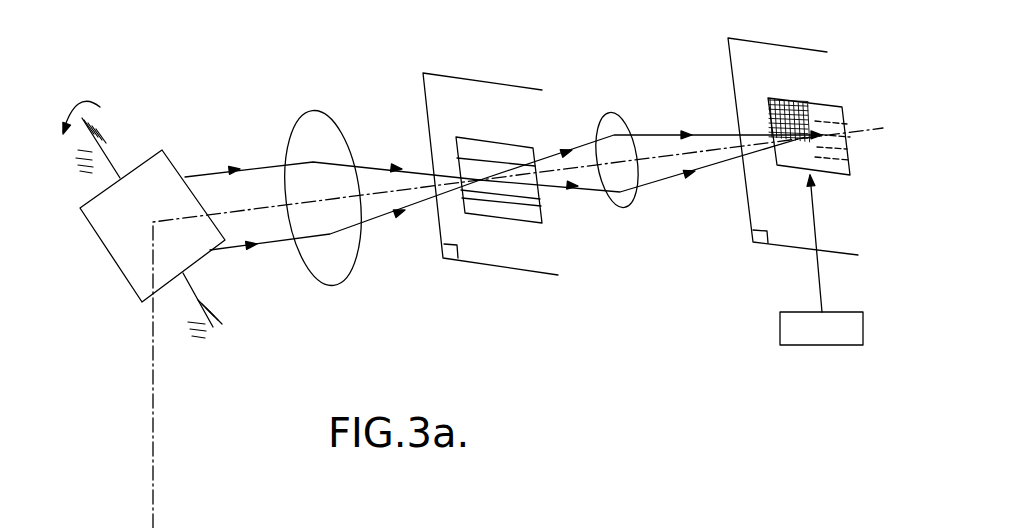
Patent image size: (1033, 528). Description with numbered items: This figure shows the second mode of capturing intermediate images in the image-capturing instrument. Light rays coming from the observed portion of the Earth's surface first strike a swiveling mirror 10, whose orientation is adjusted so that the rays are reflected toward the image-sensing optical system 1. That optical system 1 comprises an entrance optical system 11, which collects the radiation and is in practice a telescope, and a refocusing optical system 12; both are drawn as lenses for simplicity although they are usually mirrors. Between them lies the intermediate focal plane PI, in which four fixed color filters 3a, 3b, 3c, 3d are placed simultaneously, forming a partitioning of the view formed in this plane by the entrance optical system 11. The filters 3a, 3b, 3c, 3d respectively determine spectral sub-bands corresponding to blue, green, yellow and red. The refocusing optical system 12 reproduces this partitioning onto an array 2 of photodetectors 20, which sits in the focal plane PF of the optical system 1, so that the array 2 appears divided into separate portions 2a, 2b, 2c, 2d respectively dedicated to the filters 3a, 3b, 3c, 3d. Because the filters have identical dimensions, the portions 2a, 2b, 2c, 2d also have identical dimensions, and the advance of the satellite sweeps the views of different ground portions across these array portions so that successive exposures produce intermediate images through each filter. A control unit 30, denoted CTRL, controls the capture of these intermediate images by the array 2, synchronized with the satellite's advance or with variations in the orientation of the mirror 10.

The image-sensing optical system 1 is at (539, 42).
The array of photodetectors 2 is at (795, 113).
The portion of the array 2a is at (845, 167).
The portion of the array 2b is at (847, 148).
The portion of the array 2c is at (845, 117).
The portion of the array 2d is at (840, 107).
The color filter 3a is at (537, 177).
The color filter 3b is at (535, 180).
The color filter 3c is at (518, 190).
The color filter 3d is at (508, 210).
The swiveling mirror 10 is at (145, 158).
The entrance optical system 11 is at (335, 128).
The refocusing optical system 12 is at (607, 112).
The photodetectors 20 is at (772, 108).
The control unit 30 is at (810, 345).
The intermediate focal plane PI is at (443, 258).
The focal plane PF is at (753, 242).